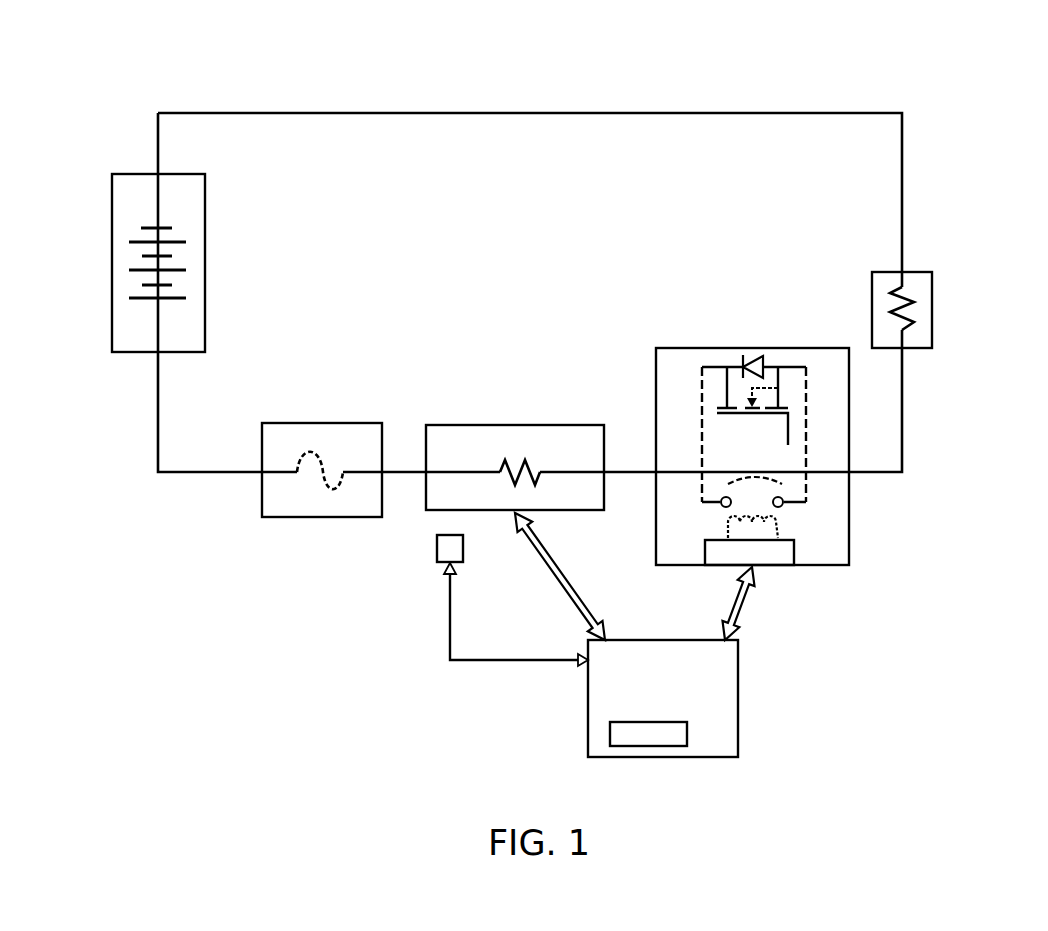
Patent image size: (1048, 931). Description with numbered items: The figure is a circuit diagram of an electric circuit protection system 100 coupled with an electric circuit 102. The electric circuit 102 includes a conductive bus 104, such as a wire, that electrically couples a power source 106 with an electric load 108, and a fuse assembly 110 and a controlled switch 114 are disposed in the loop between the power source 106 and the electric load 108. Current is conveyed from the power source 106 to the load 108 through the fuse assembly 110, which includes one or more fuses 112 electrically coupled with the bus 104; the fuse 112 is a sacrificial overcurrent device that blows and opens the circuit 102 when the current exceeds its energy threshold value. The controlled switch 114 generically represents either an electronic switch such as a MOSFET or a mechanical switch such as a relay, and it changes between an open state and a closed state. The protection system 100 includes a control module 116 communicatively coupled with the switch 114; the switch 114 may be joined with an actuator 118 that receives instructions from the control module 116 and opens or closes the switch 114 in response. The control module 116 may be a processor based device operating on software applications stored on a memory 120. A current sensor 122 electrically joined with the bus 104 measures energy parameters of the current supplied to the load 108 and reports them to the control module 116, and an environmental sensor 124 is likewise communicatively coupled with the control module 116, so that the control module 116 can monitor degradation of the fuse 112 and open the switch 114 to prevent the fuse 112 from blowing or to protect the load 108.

The electric circuit protection system 100 is at (607, 777).
The electric circuit 102 is at (935, 100).
The conductive bus 104 is at (902, 152).
The power source 106 is at (190, 174).
The electric load 108 is at (920, 272).
The fuse assembly 110 is at (273, 518).
The fuse 112 is at (318, 494).
The controlled switch 114 is at (850, 518).
The control module 116 is at (740, 687).
The actuator 118 is at (795, 553).
The memory 120 is at (688, 732).
The current sensor 122 is at (568, 512).
The environmental sensor 124 is at (464, 547).